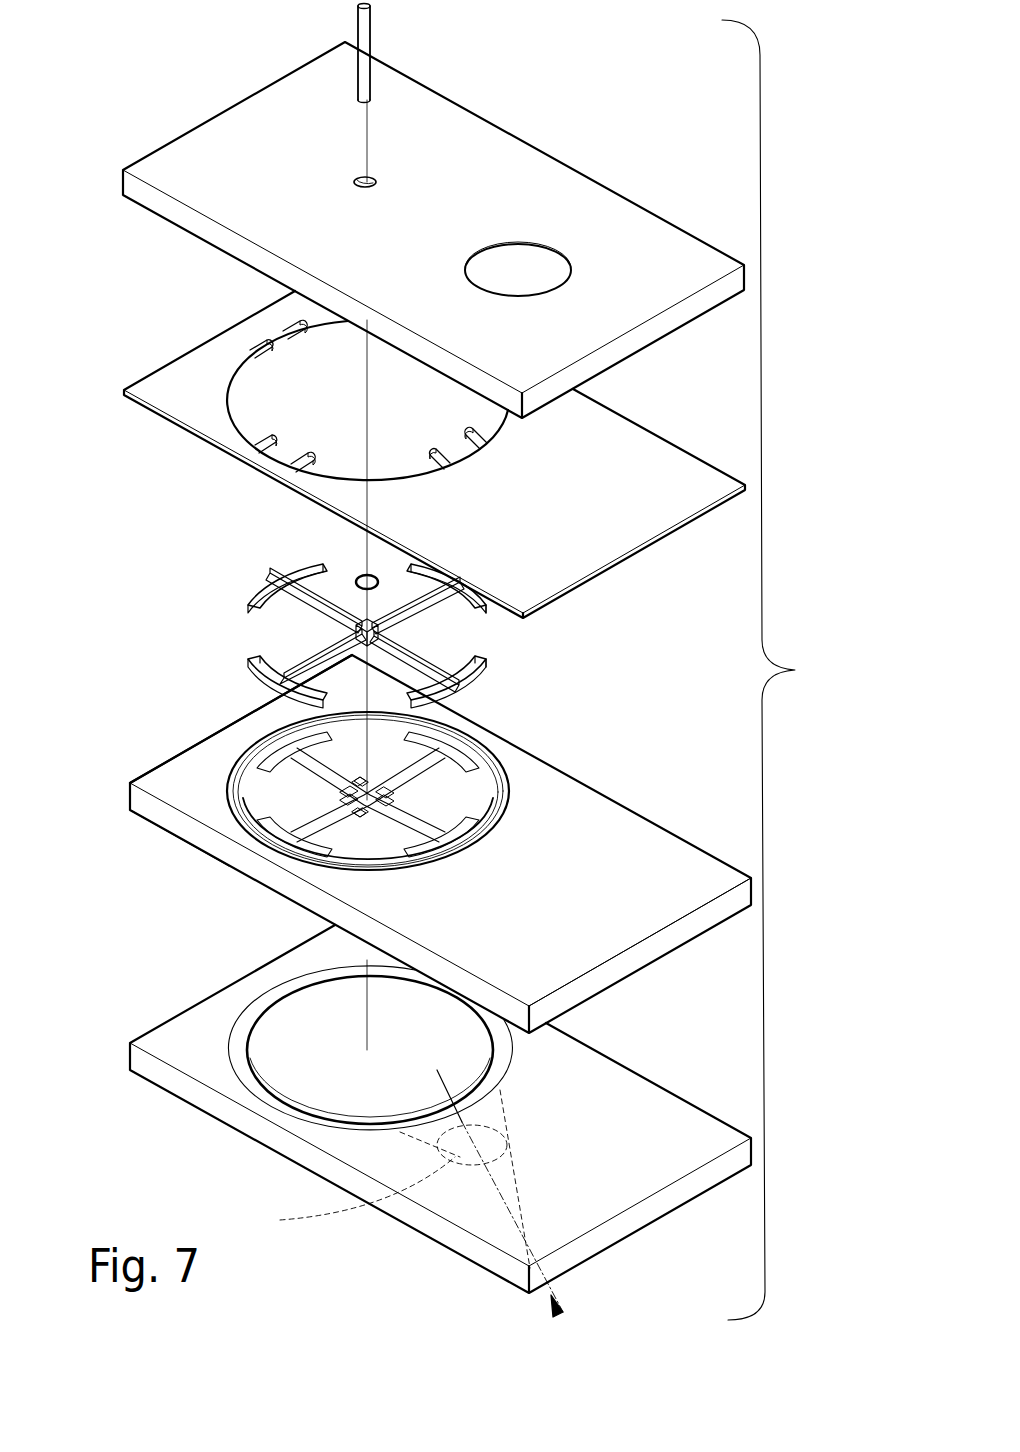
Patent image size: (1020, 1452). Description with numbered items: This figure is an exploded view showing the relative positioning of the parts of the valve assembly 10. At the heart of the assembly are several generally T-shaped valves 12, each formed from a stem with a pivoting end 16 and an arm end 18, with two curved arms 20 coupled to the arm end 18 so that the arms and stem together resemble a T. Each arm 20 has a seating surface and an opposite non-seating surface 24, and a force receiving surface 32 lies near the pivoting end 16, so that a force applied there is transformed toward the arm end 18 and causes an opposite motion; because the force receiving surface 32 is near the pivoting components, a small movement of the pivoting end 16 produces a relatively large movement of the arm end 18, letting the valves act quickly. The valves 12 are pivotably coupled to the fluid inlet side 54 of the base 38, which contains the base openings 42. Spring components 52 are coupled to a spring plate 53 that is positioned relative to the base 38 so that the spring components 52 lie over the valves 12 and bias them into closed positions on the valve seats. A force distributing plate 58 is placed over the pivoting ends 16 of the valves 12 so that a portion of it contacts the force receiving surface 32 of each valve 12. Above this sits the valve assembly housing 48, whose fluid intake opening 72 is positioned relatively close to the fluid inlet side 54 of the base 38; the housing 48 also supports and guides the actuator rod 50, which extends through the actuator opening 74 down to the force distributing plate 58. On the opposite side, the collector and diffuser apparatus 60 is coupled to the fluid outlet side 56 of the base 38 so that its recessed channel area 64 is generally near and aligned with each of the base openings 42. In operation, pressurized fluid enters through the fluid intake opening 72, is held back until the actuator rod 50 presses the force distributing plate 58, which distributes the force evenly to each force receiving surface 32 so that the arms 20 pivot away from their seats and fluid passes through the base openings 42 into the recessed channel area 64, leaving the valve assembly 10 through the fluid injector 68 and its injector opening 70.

The valve assembly 10 is at (778, 670).
The T-shaped valve 12 is at (502, 620).
The pivoting end 16 is at (328, 660).
The arm end 18 is at (258, 652).
The arms 20 is at (470, 712).
The non-seating surface 24 is at (300, 690).
The force receiving surface 32 is at (300, 560).
The base 38 is at (640, 835).
The base openings 42 is at (578, 882).
The valve assembly housing 48 is at (645, 232).
The actuator rod 50 is at (368, 25).
The spring components 52 is at (300, 338).
The spring plate 53 is at (688, 478).
The fluid inlet side 54 is at (172, 770).
The fluid outlet side 56 is at (188, 845).
The force distributing plate 58 is at (358, 578).
The collector and diffuser apparatus 60 is at (578, 1030).
The recessed channel area 64 is at (240, 1040).
The fluid injector 68 is at (497, 1090).
The injector opening 70 is at (350, 1196).
The fluid intake opening 72 is at (550, 266).
The actuator opening 74 is at (383, 182).